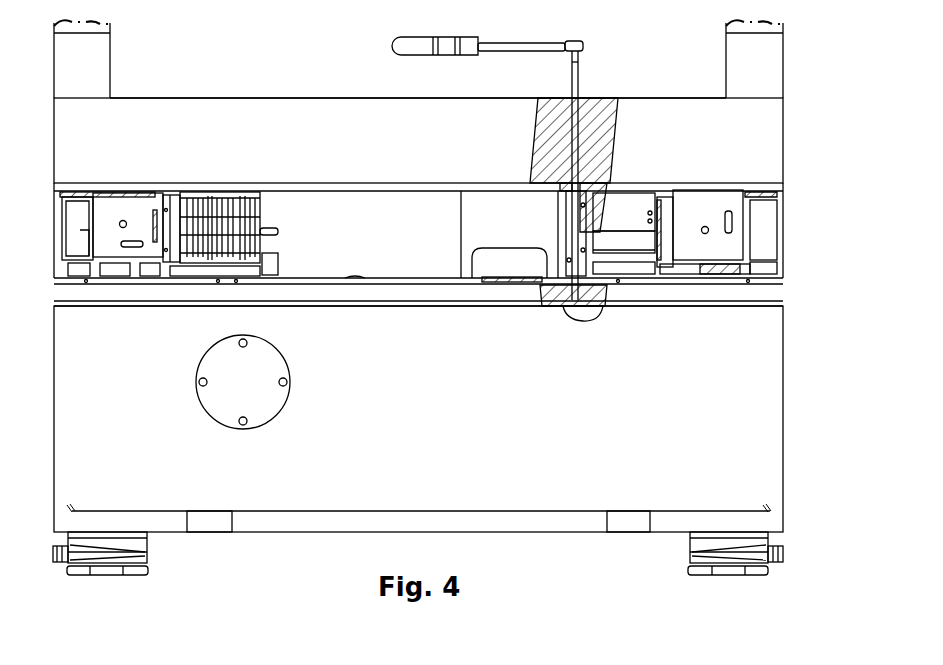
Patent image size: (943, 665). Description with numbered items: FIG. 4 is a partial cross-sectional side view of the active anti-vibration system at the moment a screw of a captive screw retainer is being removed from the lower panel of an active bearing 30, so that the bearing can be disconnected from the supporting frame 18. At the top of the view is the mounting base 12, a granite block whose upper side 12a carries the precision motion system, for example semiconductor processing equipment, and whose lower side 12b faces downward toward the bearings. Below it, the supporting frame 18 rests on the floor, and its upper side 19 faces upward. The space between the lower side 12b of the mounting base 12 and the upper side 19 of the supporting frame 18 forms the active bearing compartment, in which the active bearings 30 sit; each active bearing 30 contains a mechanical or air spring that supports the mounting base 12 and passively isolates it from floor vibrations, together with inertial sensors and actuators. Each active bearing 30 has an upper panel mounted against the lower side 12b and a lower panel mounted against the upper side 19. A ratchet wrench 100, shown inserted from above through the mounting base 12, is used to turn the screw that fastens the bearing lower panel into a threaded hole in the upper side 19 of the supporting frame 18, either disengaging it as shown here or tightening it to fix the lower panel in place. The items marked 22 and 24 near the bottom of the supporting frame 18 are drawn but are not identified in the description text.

The mounting base 12 is at (805, 143).
The upper side 12a is at (660, 97).
The lower side 12b is at (363, 193).
The ratchet wrench 100 is at (444, 65).
The active bearing 30 is at (797, 221).
The upper side 19 is at (745, 285).
The supporting frame 18 is at (807, 418).
The bottom rail 22 is at (776, 523).
The leveling foot 24 is at (808, 556).